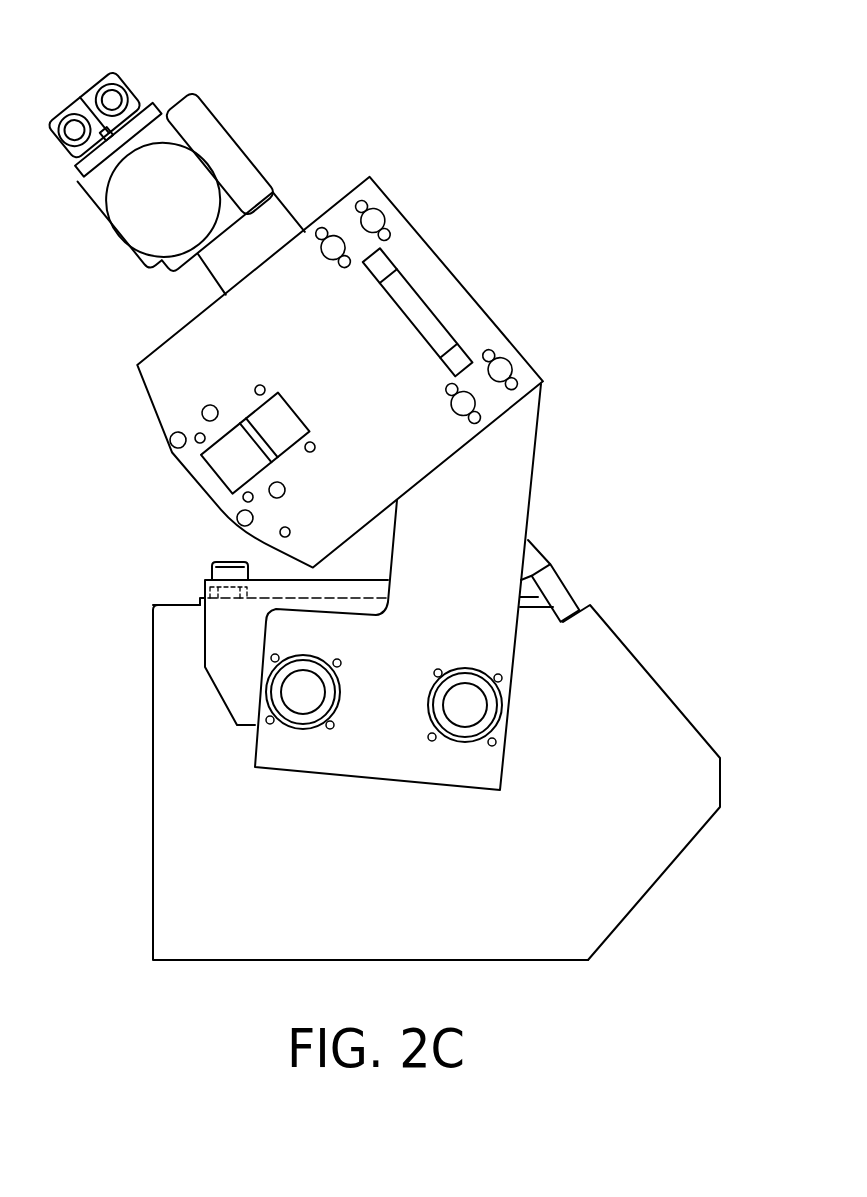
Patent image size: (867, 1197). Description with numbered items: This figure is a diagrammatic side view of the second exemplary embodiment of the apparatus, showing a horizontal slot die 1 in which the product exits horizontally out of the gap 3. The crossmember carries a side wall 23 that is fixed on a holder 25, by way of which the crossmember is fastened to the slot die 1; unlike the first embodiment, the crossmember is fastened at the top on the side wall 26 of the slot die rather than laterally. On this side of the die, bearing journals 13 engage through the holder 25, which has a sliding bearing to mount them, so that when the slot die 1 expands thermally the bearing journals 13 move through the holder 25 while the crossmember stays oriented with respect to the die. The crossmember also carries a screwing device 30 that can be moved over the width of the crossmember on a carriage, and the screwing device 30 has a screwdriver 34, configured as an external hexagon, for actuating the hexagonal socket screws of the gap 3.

The slot die 1 is at (433, 822).
The gap 3 is at (722, 787).
The bearing journals 13 is at (303, 695).
The side wall 23 is at (391, 444).
The holder 25 is at (472, 541).
The side wall of the slot die 26 is at (178, 868).
The screwing device 30 is at (120, 72).
The screwdriver 34 is at (557, 592).